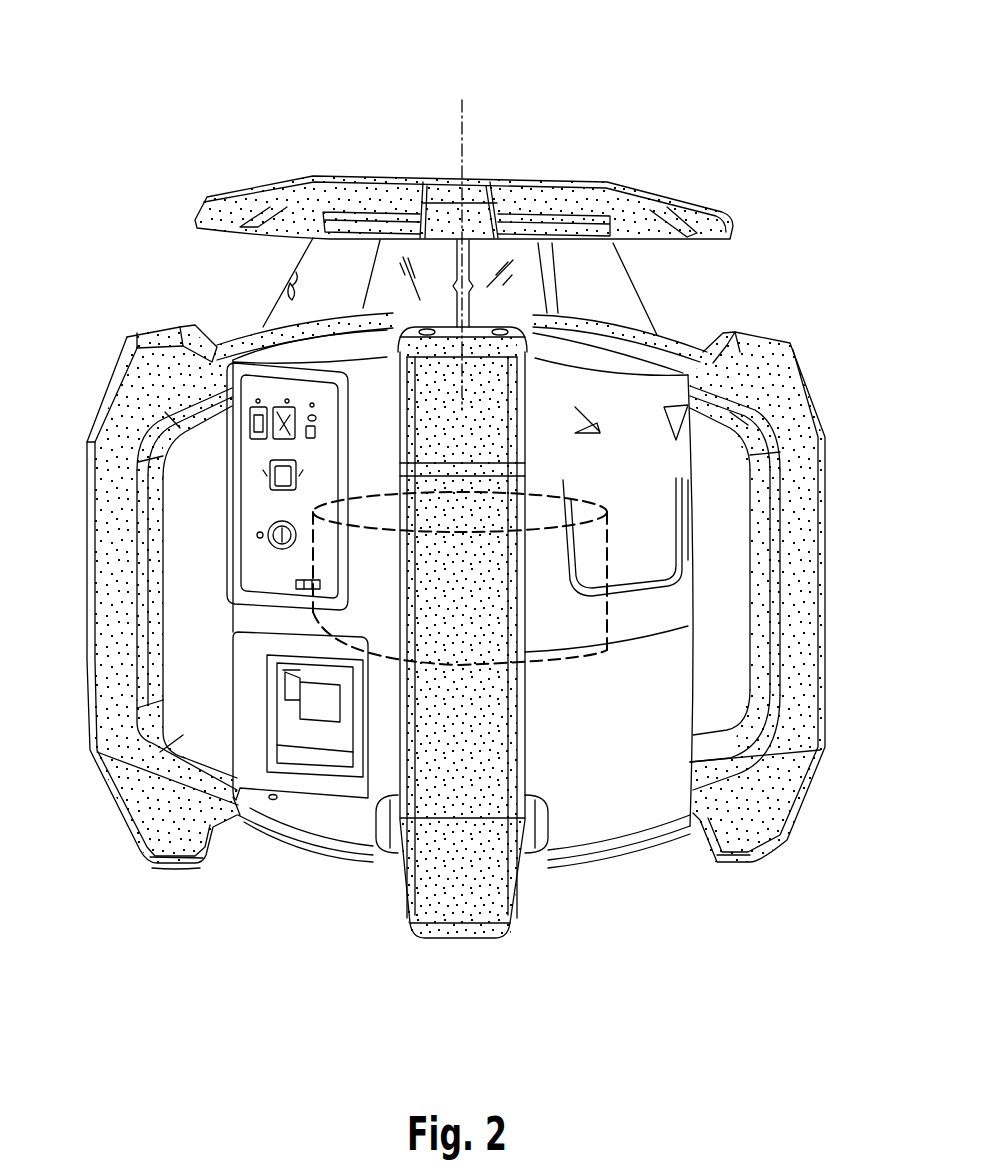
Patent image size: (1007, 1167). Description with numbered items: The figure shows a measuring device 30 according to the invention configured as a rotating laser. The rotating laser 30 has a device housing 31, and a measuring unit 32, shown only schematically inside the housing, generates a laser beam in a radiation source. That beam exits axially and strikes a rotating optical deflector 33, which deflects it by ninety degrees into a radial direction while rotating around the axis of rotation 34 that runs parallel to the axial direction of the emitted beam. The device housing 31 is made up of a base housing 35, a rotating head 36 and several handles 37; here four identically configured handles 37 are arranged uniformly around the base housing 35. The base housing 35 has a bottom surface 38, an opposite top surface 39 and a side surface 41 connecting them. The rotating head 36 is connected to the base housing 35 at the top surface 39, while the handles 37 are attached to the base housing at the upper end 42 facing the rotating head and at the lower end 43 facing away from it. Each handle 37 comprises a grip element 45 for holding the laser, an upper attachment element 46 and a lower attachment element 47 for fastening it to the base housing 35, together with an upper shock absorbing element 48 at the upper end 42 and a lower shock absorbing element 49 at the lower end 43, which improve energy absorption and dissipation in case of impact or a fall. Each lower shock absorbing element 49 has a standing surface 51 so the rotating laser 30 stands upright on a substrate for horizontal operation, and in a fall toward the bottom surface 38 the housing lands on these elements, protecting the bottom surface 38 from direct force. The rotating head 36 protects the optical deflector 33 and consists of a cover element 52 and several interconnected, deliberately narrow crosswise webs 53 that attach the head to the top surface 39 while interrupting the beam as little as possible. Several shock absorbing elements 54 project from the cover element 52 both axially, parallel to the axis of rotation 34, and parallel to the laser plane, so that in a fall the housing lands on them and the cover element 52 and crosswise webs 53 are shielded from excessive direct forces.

The measuring device 30 is at (203, 86).
The device housing 31 is at (663, 663).
The measuring unit 32 is at (560, 657).
The optical deflector 33 is at (540, 290).
The axis of rotation 34 is at (462, 118).
The base housing 35 is at (670, 607).
The rotating head 36 is at (326, 117).
The handles 37 is at (89, 405).
The bottom surface 38 is at (313, 850).
The top surface 39 is at (402, 310).
The side surface 41 is at (703, 485).
The upper end 42 is at (821, 337).
The lower end 43 is at (792, 860).
The grip element 45 is at (117, 557).
The upper attachment element 46 is at (228, 368).
The lower attachment element 47 is at (227, 753).
The upper shock absorbing element 48 is at (145, 318).
The lower shock absorbing element 49 is at (150, 877).
The standing surface 51 is at (182, 860).
The cover element 52 is at (562, 227).
The crosswise webs 53 is at (327, 260).
The shock absorbing elements 54 is at (228, 197).